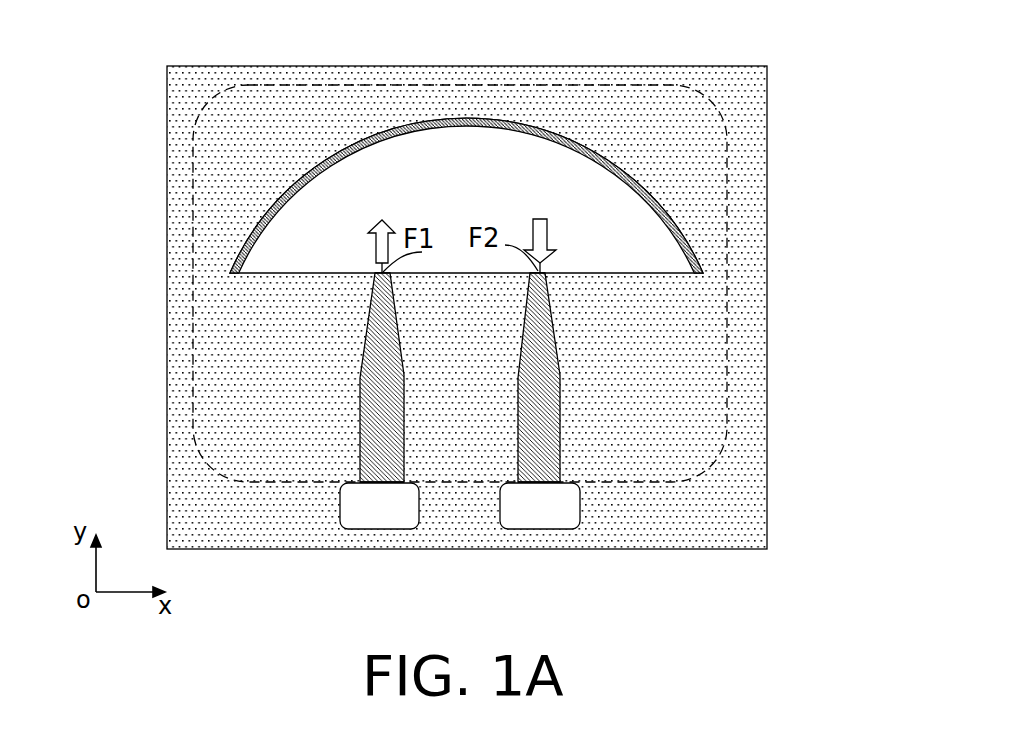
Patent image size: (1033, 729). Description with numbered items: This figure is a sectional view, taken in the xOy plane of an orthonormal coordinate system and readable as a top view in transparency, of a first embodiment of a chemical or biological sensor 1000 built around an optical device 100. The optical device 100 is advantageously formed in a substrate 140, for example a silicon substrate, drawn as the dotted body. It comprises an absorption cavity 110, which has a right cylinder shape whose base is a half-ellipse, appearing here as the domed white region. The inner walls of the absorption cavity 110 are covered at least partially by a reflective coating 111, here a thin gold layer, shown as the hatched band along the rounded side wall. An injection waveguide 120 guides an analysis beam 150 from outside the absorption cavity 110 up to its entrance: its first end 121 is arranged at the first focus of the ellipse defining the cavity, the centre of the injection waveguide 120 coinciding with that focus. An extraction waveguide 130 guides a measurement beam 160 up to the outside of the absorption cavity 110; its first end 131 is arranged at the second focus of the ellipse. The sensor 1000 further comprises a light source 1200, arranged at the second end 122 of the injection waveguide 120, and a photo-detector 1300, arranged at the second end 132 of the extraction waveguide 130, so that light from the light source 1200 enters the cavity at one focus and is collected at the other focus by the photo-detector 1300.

The chemical or biological sensor 1000 is at (781, 44).
The optical device 100 is at (290, 83).
The absorption cavity 110 is at (397, 150).
The reflective coating 111 is at (572, 133).
The substrate 140 is at (682, 150).
The analysis beam 150 is at (378, 242).
The measurement beam 160 is at (540, 232).
The injection waveguide 120 is at (370, 432).
The first end of the injection waveguide 121 is at (370, 325).
The second end of the injection waveguide 122 is at (365, 475).
The extraction waveguide 130 is at (540, 408).
The first end of the extraction waveguide 131 is at (548, 286).
The second end of the extraction waveguide 132 is at (545, 478).
The light source 1200 is at (378, 513).
The photo-detector 1300 is at (543, 503).